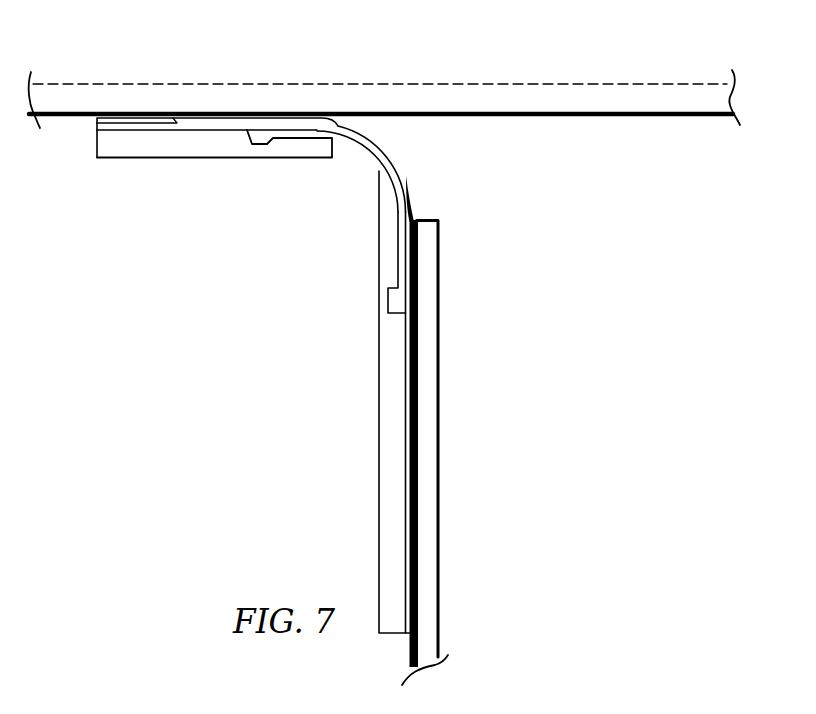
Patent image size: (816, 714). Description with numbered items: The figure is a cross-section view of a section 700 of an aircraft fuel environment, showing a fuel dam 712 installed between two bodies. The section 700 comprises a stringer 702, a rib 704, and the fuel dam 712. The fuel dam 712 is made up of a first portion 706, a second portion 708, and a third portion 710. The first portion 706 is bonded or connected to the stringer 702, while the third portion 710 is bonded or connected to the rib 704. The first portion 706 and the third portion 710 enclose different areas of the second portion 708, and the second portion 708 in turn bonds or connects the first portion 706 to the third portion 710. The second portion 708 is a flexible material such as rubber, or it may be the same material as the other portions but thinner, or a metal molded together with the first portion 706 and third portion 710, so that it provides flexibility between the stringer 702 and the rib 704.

The section 700 is at (266, 64).
The stringer 702 is at (593, 117).
The rib 704 is at (440, 442).
The first portion 706 is at (191, 178).
The second portion 708 is at (365, 156).
The third portion 710 is at (378, 400).
The fuel dam 712 is at (124, 420).